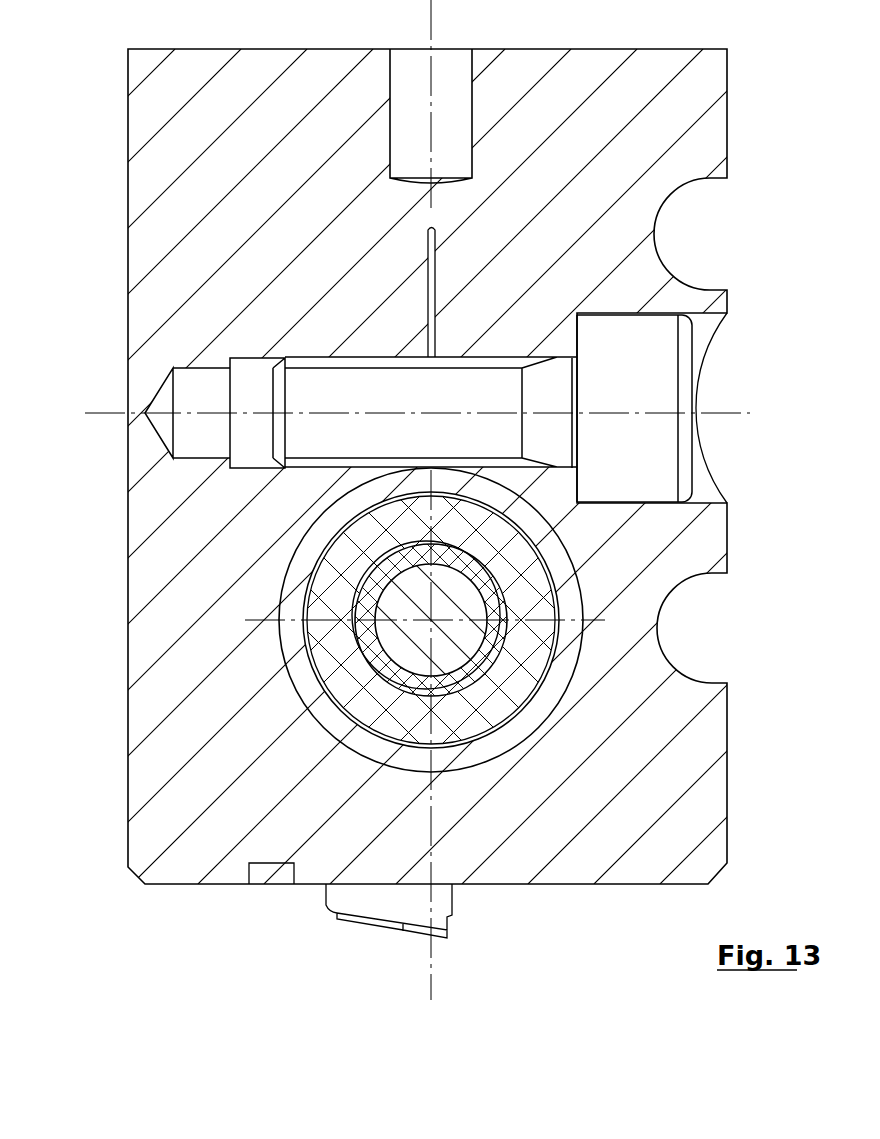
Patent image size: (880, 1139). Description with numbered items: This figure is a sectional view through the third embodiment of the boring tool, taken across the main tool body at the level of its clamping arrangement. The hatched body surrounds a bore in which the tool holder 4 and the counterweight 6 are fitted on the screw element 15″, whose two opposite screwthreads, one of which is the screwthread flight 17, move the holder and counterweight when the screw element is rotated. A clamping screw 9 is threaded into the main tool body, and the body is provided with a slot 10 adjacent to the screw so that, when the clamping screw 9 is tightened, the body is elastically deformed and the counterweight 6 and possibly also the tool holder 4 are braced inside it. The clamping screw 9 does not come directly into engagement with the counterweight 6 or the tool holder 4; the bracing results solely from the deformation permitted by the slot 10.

The tool holder 4 is at (305, 528).
The counterweight 6 is at (322, 585).
The clamping screw 9 is at (668, 433).
The slot 10 is at (437, 320).
The screw element 15 is at (490, 614).
The screwthread flight 17 is at (363, 627).